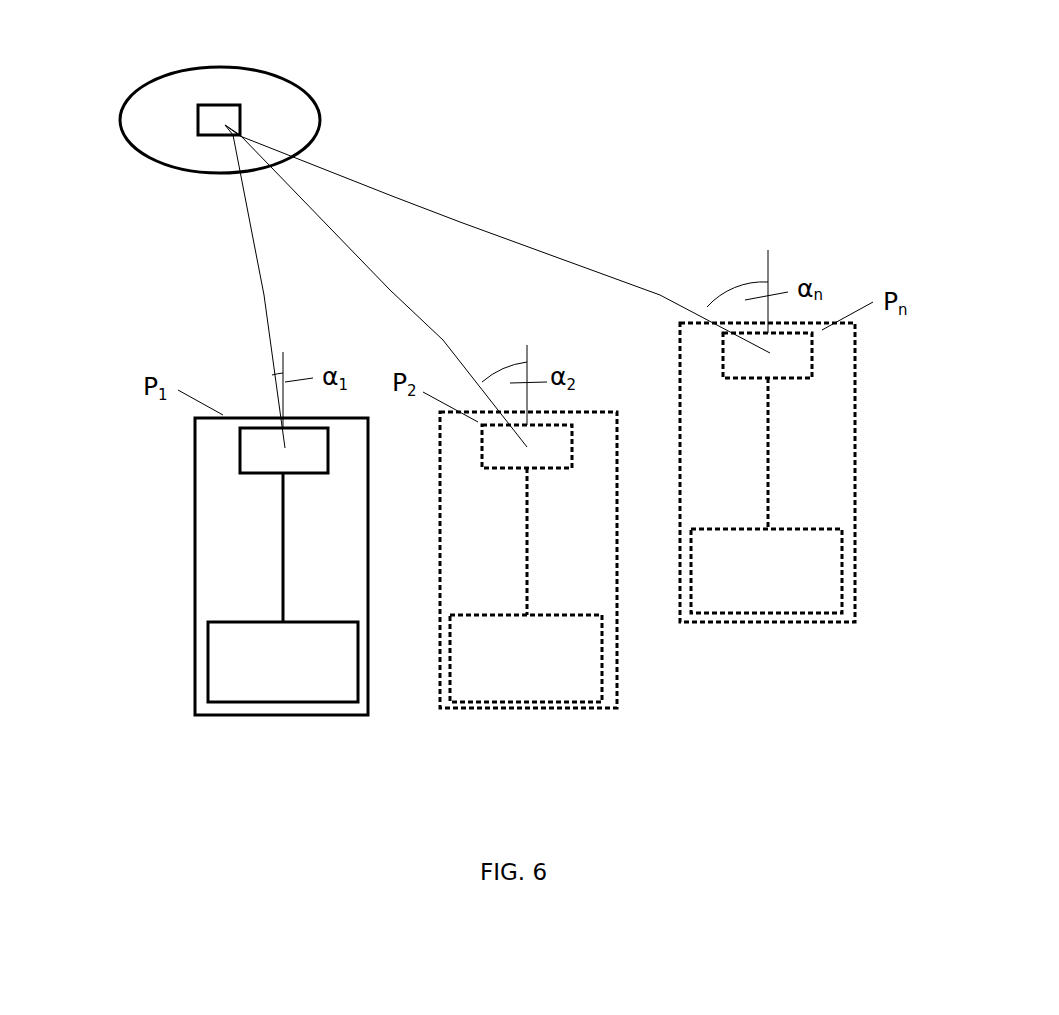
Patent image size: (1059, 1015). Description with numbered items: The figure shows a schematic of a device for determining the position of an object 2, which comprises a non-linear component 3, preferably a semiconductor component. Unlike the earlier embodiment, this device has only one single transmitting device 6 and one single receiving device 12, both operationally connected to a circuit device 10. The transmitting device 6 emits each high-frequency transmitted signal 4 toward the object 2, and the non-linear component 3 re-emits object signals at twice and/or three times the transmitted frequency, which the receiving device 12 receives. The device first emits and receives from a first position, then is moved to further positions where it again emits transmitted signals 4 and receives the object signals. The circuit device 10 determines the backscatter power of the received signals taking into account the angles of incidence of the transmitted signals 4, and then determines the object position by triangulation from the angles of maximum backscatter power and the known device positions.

The object 2 is at (213, 128).
The non-linear component 3 is at (287, 107).
The transmitted signal 4 is at (243, 222).
The transmitting device 6 is at (530, 436).
The receiving device 12 is at (253, 458).
The circuit device 10 is at (310, 697).